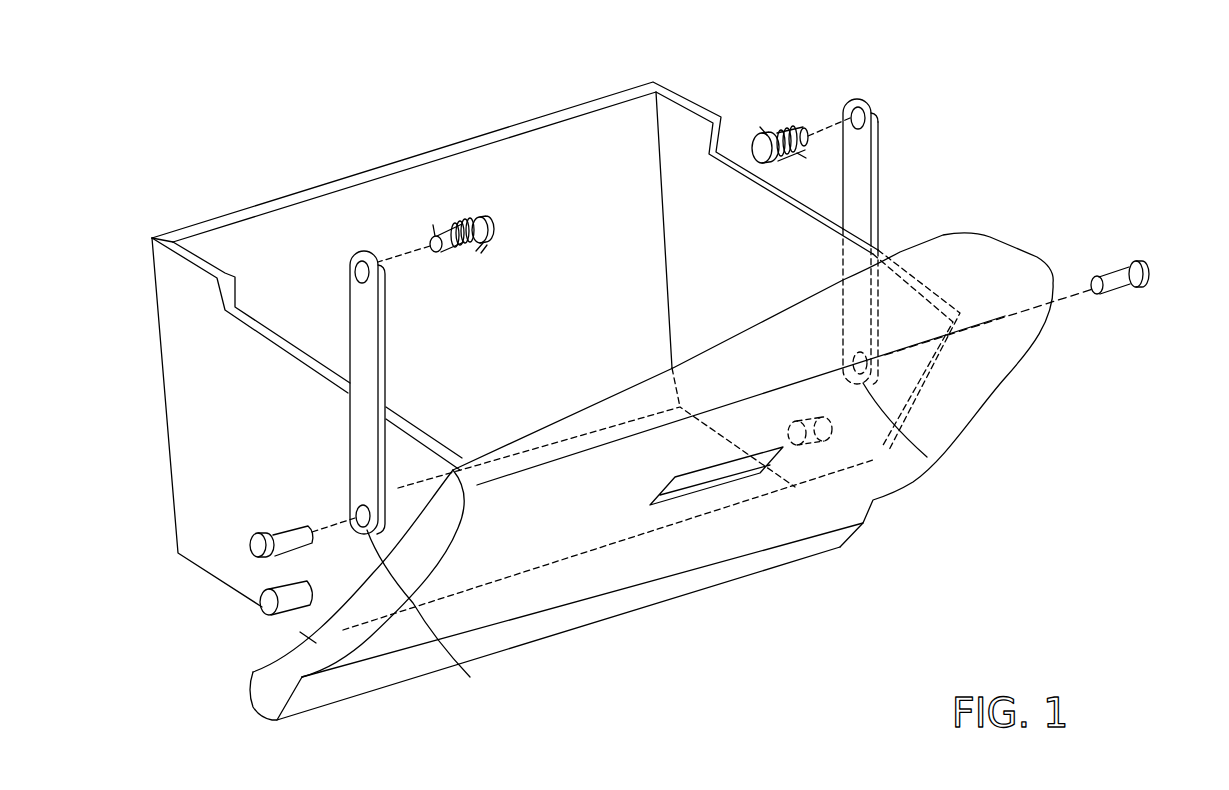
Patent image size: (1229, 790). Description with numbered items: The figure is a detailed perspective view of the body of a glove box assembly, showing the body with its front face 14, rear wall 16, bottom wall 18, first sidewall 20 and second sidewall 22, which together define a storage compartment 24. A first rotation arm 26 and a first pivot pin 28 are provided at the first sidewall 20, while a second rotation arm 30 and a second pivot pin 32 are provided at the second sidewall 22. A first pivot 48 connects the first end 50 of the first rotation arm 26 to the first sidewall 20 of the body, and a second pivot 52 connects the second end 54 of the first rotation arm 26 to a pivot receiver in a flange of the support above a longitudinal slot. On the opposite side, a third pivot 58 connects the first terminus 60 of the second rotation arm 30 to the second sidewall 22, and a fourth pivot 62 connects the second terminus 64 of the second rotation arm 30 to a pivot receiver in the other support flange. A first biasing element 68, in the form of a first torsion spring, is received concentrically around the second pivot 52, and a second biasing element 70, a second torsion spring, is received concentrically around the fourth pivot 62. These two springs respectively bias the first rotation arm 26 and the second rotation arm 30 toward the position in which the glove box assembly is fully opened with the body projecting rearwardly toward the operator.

The front face 14 is at (530, 558).
The rear wall 16 is at (553, 289).
The bottom wall 18 is at (587, 523).
The first sidewall 20 is at (753, 254).
The second sidewall 22 is at (243, 404).
The storage compartment 24 is at (598, 205).
The first rotation arm 26 is at (882, 210).
The first pivot pin 28 is at (838, 457).
The second rotation arm 30 is at (372, 381).
The second pivot pin 32 is at (267, 608).
The first pivot 48 is at (1122, 289).
The first end 50 is at (927, 457).
The second pivot 52 is at (760, 132).
The second end 54 is at (864, 99).
The third pivot 58 is at (282, 533).
The first terminus 60 is at (470, 677).
The fourth pivot 62 is at (477, 215).
The second terminus 64 is at (360, 247).
The first biasing element 68 is at (788, 127).
The second biasing element 70 is at (453, 220).